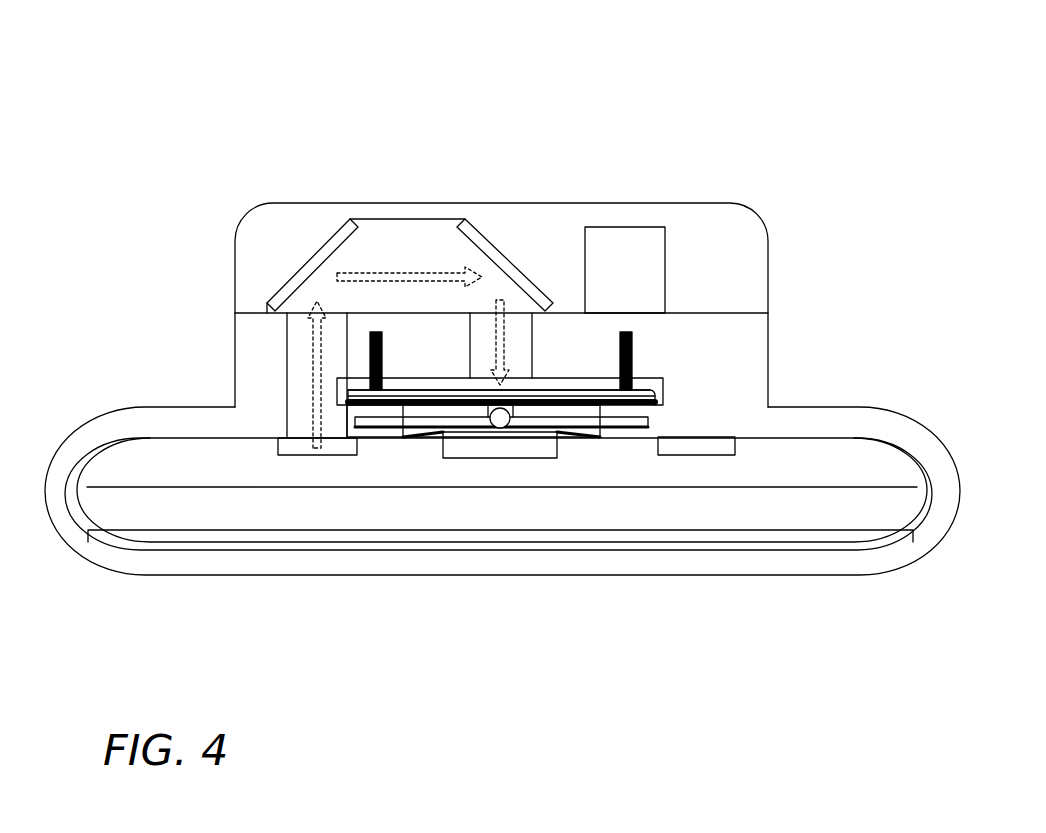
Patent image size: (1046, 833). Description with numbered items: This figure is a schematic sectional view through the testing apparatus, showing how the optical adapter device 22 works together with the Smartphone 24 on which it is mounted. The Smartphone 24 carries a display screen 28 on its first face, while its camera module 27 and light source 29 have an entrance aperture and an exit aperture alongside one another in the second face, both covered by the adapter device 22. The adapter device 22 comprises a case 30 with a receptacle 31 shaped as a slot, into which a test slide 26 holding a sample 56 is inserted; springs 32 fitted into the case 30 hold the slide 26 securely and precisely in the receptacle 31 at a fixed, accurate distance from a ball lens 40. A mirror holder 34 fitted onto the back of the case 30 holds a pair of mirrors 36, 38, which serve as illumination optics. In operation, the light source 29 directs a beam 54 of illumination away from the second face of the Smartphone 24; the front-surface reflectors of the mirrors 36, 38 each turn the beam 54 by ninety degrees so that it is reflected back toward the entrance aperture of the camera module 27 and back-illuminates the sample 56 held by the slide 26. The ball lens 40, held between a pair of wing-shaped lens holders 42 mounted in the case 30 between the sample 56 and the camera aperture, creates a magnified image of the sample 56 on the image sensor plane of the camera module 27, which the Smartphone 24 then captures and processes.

The optical adapter device 22 is at (238, 79).
The Smartphone 24 is at (865, 505).
The test slide 26 is at (573, 390).
The camera module 27 is at (538, 458).
The display screen 28 is at (650, 550).
The light source 29 is at (302, 446).
The case 30 is at (918, 431).
The receptacle 31 is at (663, 398).
The springs 32 is at (633, 350).
The mirror holder 34 is at (709, 203).
The mirror 36 is at (322, 243).
The mirror 38 is at (494, 250).
The ball lens 40 is at (500, 427).
The lens holders 42 is at (424, 433).
The beam 54 is at (298, 345).
The sample 56 is at (577, 406).